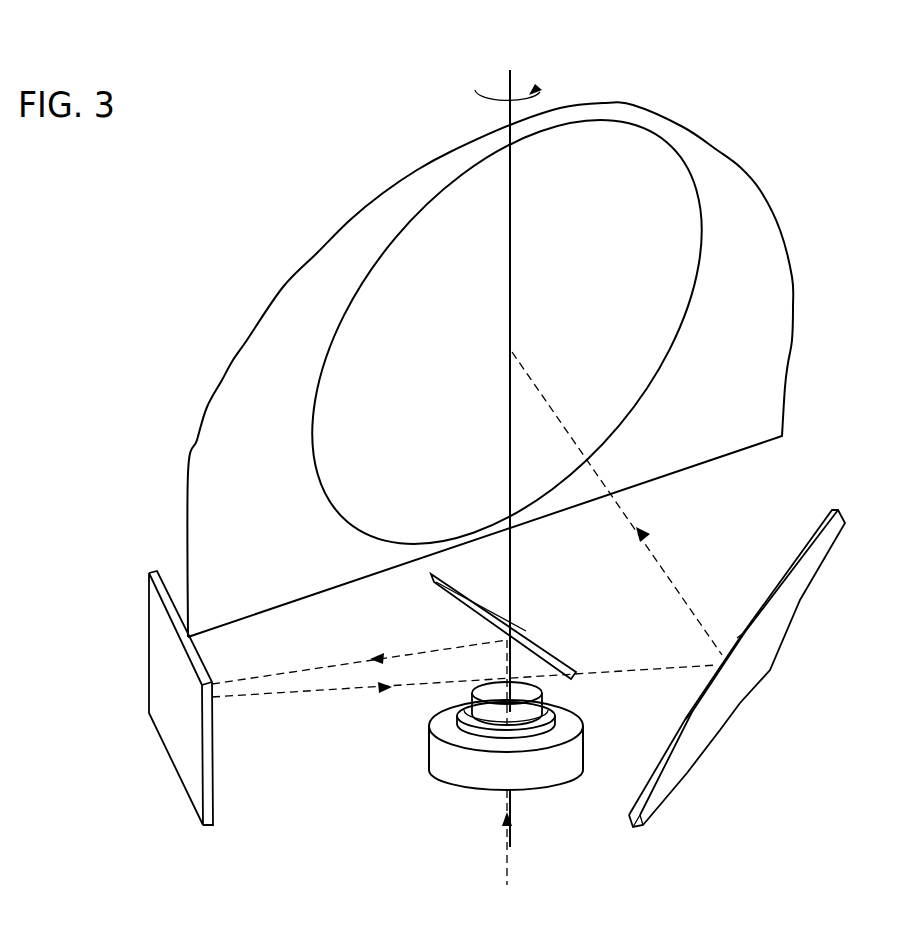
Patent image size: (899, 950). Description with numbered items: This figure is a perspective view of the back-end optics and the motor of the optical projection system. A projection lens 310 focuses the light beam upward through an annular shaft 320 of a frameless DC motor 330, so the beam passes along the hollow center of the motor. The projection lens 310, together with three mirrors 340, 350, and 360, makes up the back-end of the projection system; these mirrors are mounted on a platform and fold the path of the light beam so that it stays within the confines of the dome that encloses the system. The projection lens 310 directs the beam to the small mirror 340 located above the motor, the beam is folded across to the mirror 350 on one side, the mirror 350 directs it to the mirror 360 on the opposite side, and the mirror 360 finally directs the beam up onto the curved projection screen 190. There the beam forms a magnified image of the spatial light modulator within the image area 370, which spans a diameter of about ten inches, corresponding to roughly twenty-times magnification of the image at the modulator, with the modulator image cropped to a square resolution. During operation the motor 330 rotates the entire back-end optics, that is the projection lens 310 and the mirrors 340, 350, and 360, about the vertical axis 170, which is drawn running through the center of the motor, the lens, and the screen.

The axis 170 is at (513, 72).
The projection screen 190 is at (772, 356).
The image area 370 is at (591, 297).
The mirror 340 is at (543, 640).
The mirror 350 is at (178, 740).
The mirror 360 is at (740, 671).
The projection lens 310 is at (523, 696).
The annular shaft 320 is at (430, 716).
The frameless DC motor 330 is at (453, 768).